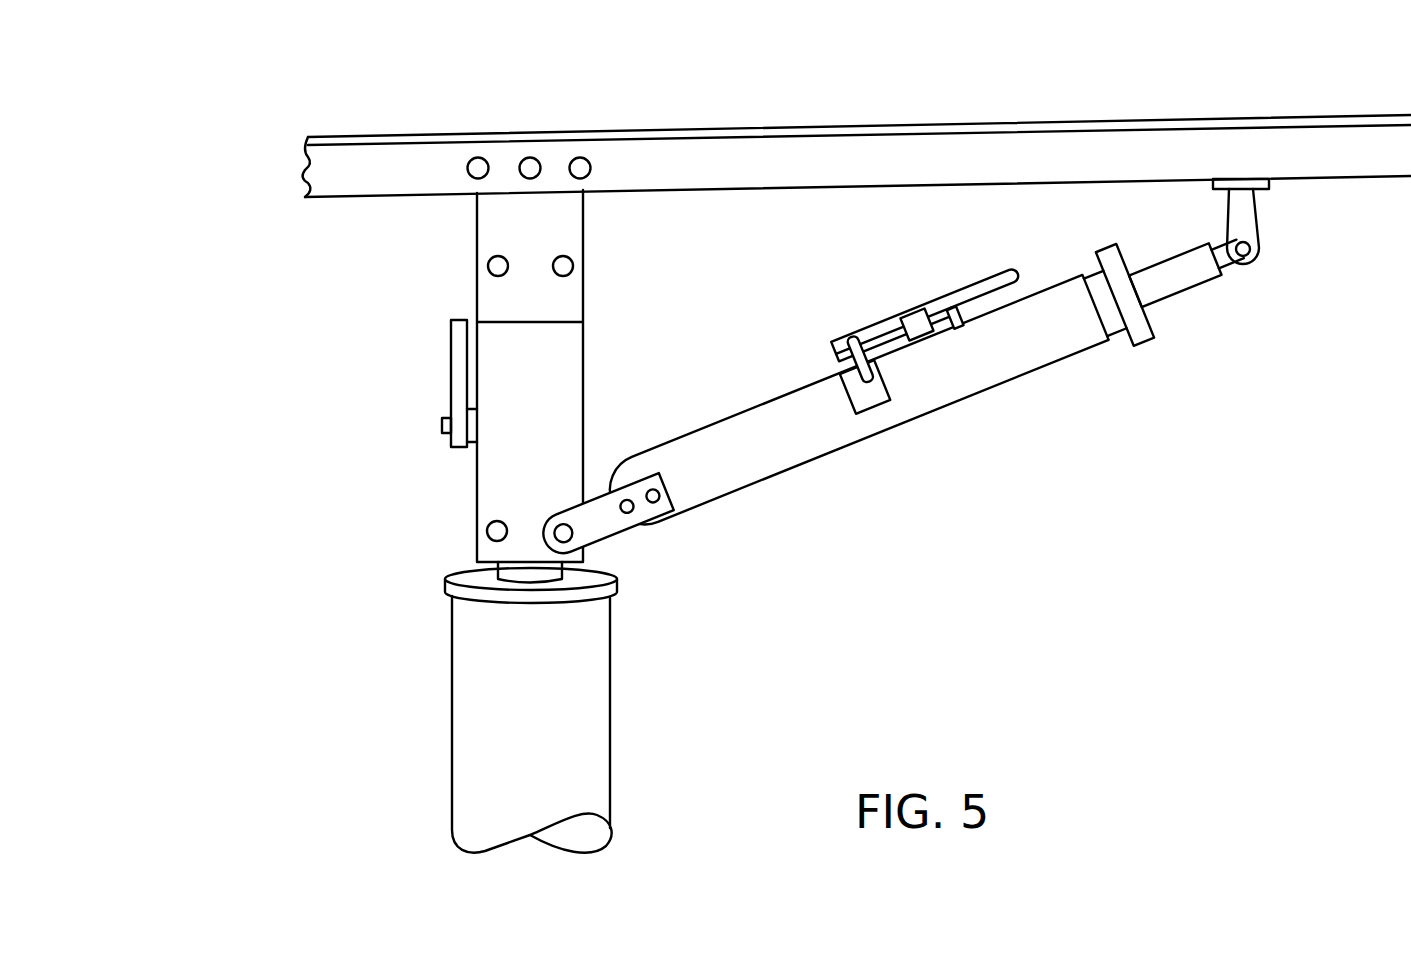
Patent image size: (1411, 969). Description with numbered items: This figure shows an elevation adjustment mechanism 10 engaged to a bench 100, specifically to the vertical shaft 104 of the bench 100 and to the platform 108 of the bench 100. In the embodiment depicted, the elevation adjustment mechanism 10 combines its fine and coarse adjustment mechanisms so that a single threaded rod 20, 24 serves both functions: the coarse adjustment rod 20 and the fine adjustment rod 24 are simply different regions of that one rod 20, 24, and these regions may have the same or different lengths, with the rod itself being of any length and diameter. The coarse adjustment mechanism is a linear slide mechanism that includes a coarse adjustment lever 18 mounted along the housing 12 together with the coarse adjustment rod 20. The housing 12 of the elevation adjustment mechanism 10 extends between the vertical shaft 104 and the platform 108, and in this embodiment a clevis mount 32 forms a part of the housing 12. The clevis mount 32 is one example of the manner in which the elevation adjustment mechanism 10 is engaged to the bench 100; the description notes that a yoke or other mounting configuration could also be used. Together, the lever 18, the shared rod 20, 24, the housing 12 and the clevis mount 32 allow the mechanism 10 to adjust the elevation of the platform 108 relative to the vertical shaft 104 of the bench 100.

The bench 100 is at (202, 118).
The platform 108 is at (938, 123).
The vertical shaft 104 is at (477, 281).
The coarse adjustment lever 18 is at (887, 320).
The coarse adjustment rod 20 is at (1186, 297).
The fine adjustment rod 24 is at (1240, 223).
The housing 12 is at (987, 396).
The elevation adjustment mechanism 10 is at (922, 495).
The clevis mount 32 is at (628, 550).